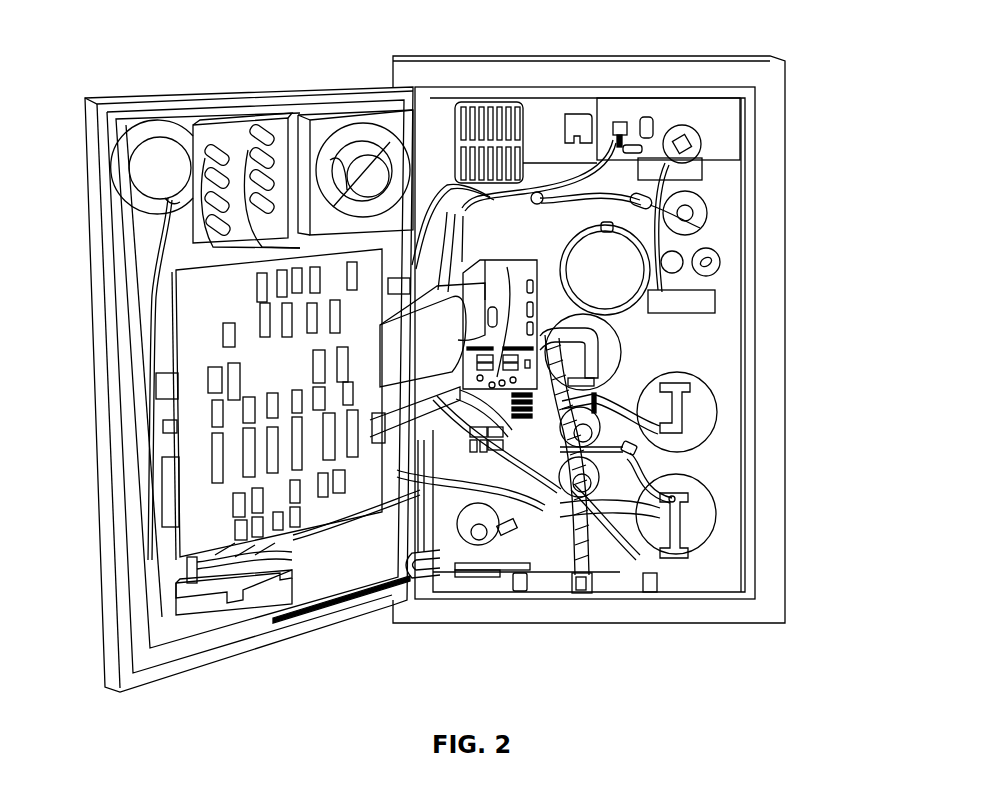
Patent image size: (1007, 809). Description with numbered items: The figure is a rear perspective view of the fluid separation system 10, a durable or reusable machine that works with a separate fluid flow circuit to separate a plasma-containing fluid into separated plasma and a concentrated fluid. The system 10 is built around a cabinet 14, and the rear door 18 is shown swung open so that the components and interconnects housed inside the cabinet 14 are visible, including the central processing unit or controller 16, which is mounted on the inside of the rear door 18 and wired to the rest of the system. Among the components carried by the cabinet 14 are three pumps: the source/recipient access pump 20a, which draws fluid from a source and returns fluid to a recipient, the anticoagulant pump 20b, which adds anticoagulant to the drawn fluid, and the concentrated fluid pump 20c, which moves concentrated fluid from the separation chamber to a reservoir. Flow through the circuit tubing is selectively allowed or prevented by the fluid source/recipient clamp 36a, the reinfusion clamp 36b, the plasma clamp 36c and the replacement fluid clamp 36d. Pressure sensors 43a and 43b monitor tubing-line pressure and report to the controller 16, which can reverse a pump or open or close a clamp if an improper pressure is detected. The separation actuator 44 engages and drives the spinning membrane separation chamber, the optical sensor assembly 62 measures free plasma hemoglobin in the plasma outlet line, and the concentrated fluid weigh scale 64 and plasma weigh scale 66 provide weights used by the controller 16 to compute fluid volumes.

The fluid separation system 10 is at (64, 603).
The cabinet 14 is at (763, 620).
The controller 16 is at (188, 394).
The rear door 18 is at (177, 670).
The source/recipient access pump 20a is at (697, 527).
The anticoagulant pump 20b is at (703, 417).
The concentrated fluid pump 20c is at (598, 372).
The fluid source/recipient clamp 36a is at (598, 447).
The reinfusion clamp 36b is at (597, 480).
The plasma clamp 36c is at (480, 528).
The replacement fluid clamp 36d is at (690, 206).
The pressure sensor 43a is at (716, 258).
The pressure sensor 43b is at (672, 252).
The separation actuator 44 is at (488, 112).
The optical sensor assembly 62 is at (493, 450).
The concentrated fluid weigh scale 64 is at (523, 380).
The plasma weigh scale 66 is at (462, 563).